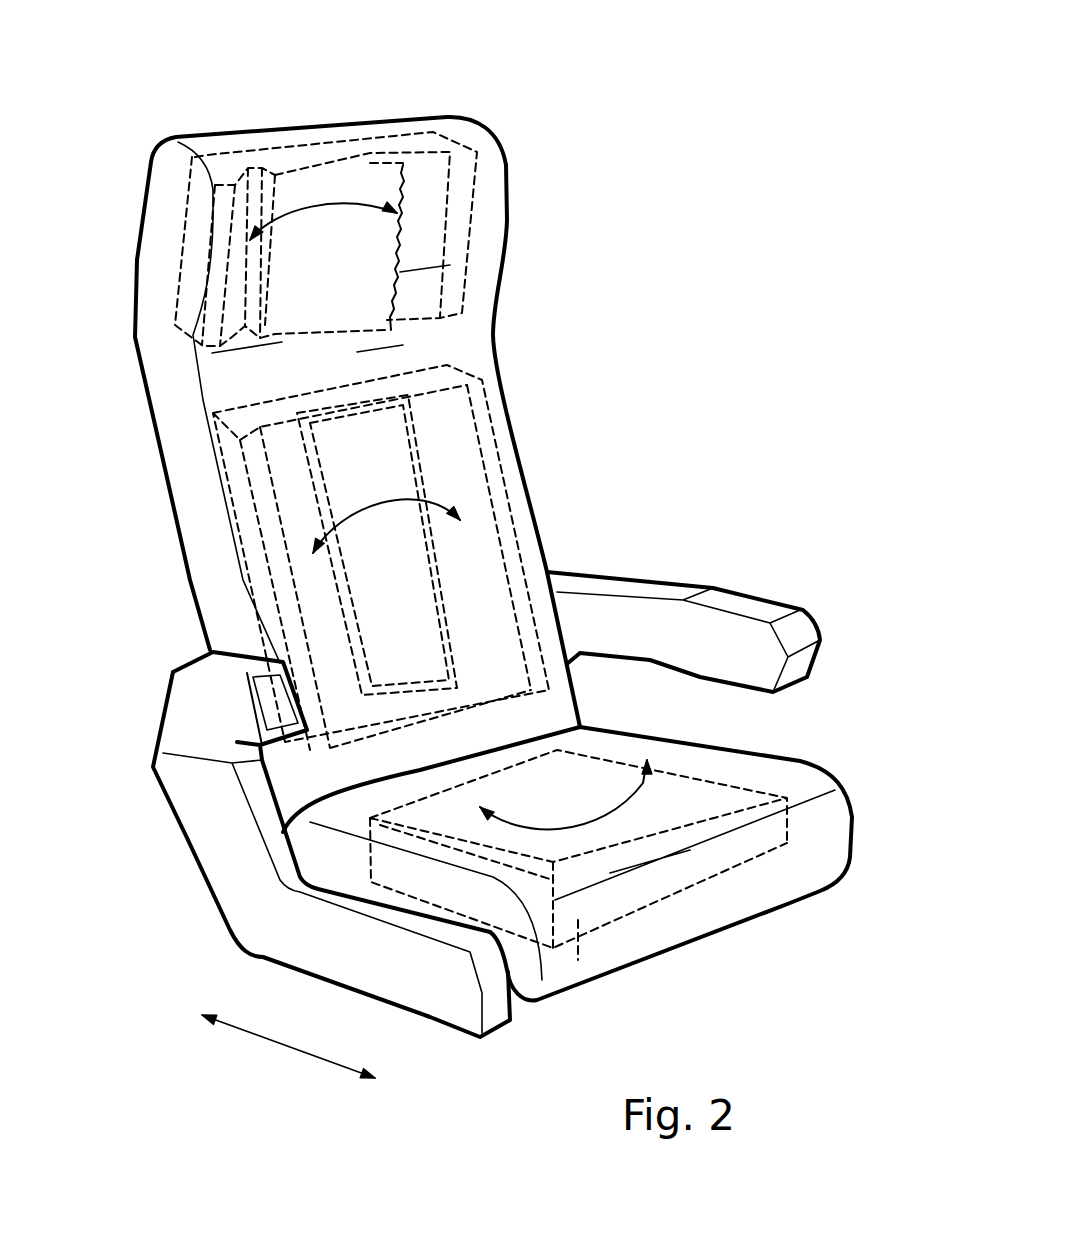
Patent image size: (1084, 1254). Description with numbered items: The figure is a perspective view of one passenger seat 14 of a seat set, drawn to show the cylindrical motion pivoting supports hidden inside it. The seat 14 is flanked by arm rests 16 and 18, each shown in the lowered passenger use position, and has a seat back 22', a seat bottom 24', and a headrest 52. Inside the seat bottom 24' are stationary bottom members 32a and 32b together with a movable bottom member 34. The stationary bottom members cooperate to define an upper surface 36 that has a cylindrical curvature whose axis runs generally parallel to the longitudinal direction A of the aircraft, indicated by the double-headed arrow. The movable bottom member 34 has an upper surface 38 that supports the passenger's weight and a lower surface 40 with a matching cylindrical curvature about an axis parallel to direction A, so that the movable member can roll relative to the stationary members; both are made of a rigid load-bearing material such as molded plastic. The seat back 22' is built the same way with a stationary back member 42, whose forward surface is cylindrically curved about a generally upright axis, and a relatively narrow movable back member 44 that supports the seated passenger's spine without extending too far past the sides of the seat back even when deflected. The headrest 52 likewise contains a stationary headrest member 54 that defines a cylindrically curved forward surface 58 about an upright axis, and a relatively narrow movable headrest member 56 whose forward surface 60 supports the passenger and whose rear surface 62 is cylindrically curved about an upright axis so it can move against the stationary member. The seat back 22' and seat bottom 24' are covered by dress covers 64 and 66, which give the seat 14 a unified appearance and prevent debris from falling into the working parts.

The seat 14 is at (300, 130).
The arm rest 16 is at (200, 708).
The arm rest 18 is at (637, 590).
The seat back 22' is at (430, 526).
The seat bottom 24' is at (533, 781).
The stationary bottom member 32a is at (578, 920).
The stationary bottom member 32b is at (787, 830).
The movable bottom member 34 is at (700, 877).
The upper surface 36 is at (410, 828).
The upper surface 38 is at (688, 790).
The lower surface 40 is at (783, 803).
The stationary back member 42 is at (497, 457).
The movable back member 44 is at (453, 580).
The headrest 52 is at (346, 187).
The stationary headrest member 54 is at (470, 232).
The movable headrest member 56 is at (403, 188).
The forward surface 58 is at (417, 283).
The forward surface 60 is at (293, 260).
The rear surface 62 is at (262, 195).
The dress cover 64 is at (165, 398).
The dress cover 66 is at (773, 887).
The longitudinal direction A is at (260, 1037).